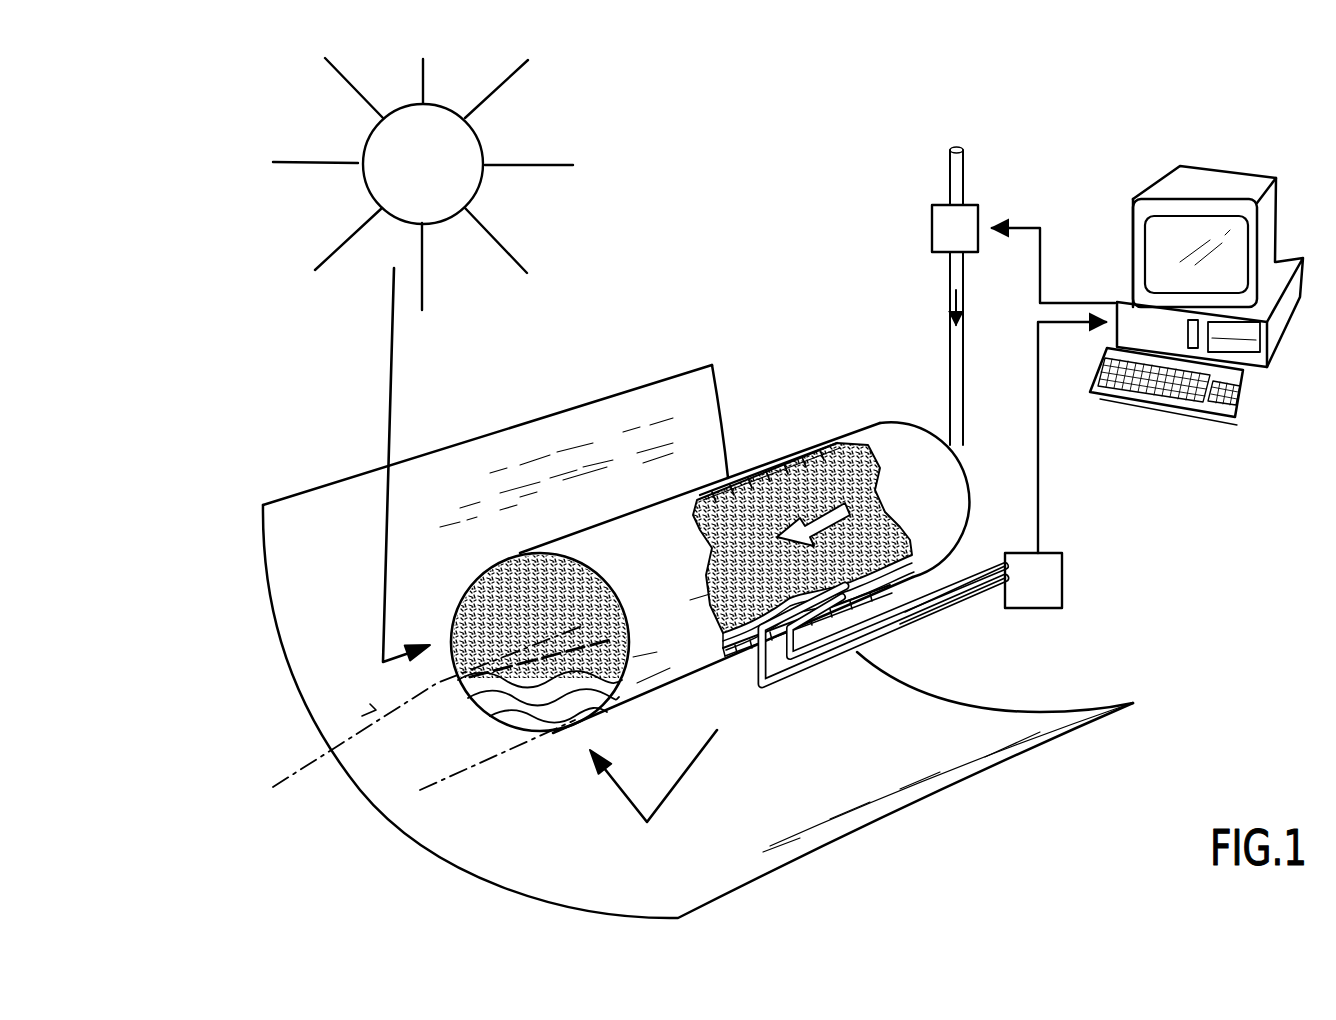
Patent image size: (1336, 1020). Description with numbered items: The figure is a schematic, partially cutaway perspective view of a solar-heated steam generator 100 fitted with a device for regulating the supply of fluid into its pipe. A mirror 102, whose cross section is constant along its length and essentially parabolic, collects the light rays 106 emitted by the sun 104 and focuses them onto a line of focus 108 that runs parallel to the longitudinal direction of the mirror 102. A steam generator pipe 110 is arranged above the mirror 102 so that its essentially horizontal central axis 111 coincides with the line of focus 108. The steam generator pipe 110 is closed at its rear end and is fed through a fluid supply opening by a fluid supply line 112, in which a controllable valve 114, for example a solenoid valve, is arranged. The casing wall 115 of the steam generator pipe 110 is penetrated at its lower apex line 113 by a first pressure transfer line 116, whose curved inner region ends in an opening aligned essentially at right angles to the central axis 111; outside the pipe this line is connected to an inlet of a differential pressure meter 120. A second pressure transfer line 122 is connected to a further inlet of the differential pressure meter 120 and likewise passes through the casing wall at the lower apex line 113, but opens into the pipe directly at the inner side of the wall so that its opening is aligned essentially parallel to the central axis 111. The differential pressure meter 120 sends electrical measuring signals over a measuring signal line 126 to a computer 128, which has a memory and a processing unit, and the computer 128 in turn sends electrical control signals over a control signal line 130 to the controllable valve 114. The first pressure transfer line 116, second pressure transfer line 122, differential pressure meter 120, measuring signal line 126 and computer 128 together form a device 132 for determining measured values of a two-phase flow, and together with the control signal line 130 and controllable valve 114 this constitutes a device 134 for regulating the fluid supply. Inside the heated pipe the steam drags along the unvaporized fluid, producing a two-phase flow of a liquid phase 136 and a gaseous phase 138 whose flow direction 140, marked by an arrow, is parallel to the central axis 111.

The solar-heated steam generator 100 is at (782, 447).
The mirror 102 is at (297, 510).
The sun 104 is at (380, 172).
The light rays 106 is at (386, 428).
The line of focus 108 is at (375, 708).
The steam generator pipe 110 is at (598, 542).
The central axis 111 is at (432, 688).
The fluid supply line 112 is at (948, 288).
The lower apex line 113 is at (467, 770).
The controllable valve 114 is at (940, 222).
The casing wall 115 is at (740, 650).
The first pressure transfer line 116 is at (817, 660).
The differential pressure meter 120 is at (1053, 590).
The second pressure transfer line 122 is at (933, 598).
The measuring signal line 126 is at (1040, 490).
The computer 128 is at (1295, 182).
The control signal line 130 is at (1040, 247).
The device for determining measured values 132 is at (1142, 424).
The device for regulating the supply of fluid 134 is at (1137, 174).
The liquid phase 136 is at (550, 707).
The gaseous phase 138 is at (492, 580).
The flow direction 140 is at (820, 505).